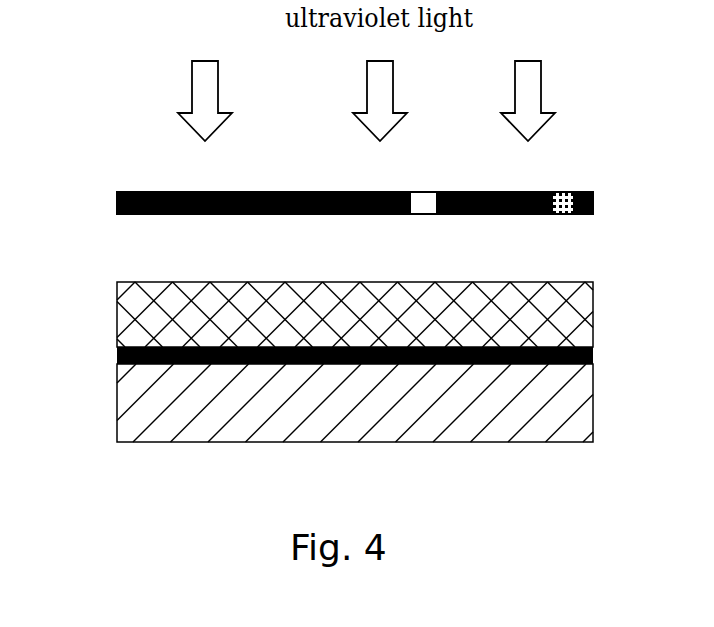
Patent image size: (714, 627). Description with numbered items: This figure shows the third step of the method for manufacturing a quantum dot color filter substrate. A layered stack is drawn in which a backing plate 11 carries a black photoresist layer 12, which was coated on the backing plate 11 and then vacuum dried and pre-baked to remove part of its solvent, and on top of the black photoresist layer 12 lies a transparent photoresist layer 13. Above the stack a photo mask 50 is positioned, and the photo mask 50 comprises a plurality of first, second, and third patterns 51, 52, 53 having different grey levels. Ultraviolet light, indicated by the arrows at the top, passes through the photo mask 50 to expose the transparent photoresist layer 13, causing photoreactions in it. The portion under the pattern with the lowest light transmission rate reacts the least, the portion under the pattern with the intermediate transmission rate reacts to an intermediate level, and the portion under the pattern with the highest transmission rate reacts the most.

The photo mask 50 is at (333, 164).
The first pattern 51 is at (285, 199).
The second pattern 52 is at (565, 197).
The third pattern 53 is at (425, 198).
The transparent photoresist layer 13 is at (143, 313).
The black photoresist layer 12 is at (117, 357).
The backing plate 11 is at (143, 410).